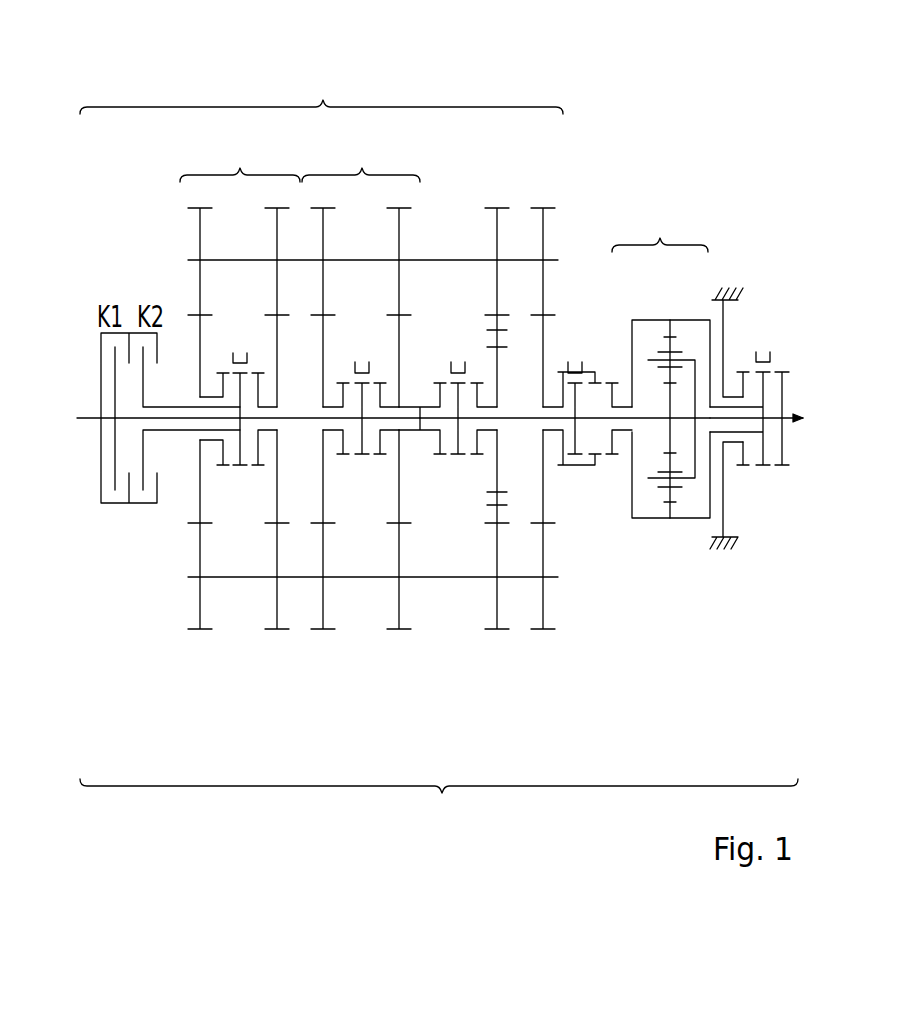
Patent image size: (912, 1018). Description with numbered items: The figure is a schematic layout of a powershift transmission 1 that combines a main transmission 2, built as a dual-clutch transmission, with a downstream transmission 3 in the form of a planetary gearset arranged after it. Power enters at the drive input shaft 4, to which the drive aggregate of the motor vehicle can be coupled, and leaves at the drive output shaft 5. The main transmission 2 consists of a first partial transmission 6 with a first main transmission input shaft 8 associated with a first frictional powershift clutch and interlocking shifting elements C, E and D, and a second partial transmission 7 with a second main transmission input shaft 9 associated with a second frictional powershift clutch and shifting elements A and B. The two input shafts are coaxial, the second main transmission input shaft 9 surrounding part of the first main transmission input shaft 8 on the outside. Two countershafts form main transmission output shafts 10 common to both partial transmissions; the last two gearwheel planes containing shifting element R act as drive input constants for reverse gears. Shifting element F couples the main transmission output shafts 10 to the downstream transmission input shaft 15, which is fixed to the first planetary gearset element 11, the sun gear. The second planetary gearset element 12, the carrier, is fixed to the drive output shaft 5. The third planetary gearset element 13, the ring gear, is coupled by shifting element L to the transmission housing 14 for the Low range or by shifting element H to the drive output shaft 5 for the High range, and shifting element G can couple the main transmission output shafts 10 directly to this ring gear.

The powershift transmission 1 is at (439, 805).
The main transmission 2 is at (356, 345).
The downstream transmission 3 is at (700, 329).
The drive input shaft 4 is at (90, 414).
The drive output shaft 5 is at (794, 412).
The first partial transmission 6 is at (361, 378).
The second partial transmission 7 is at (240, 378).
The first main transmission input shaft 8 is at (185, 410).
The second main transmission input shaft 9 is at (170, 432).
The main transmission output shaft 10 is at (517, 260).
The first planetary gearset element 11 is at (668, 430).
The second planetary gearset element 12 is at (682, 490).
The third planetary gearset element 13 is at (660, 518).
The transmission housing 14 is at (729, 285).
The downstream transmission input shaft 15 is at (624, 428).